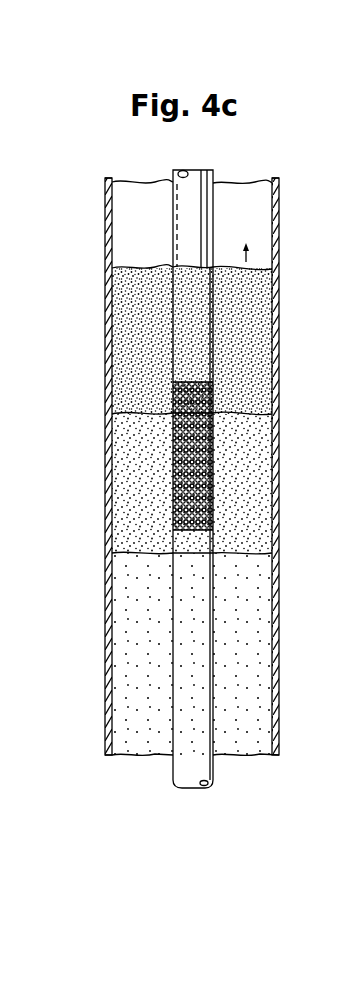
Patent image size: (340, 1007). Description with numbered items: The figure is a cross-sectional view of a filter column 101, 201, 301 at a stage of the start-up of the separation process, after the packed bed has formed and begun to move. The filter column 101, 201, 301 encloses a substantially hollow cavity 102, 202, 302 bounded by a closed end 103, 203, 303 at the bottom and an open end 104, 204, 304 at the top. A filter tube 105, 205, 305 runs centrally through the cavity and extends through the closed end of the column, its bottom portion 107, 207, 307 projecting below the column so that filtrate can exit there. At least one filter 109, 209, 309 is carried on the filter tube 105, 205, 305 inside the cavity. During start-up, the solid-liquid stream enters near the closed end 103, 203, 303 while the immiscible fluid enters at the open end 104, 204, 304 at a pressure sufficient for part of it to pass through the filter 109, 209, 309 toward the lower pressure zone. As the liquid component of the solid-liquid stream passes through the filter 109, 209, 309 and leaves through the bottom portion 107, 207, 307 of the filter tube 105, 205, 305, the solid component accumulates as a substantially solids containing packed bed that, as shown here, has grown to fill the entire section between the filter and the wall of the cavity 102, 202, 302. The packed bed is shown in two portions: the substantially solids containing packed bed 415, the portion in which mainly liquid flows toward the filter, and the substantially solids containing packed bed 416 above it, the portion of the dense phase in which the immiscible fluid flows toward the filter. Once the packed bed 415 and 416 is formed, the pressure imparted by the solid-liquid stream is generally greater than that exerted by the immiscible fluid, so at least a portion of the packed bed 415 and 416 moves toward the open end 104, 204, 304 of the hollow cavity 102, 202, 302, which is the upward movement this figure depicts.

The filter column 101 is at (170, 490).
The filter column 201 is at (170, 490).
The filter column 301 is at (0, 466).
The substantially hollow cavity 102 is at (161, 466).
The substantially hollow cavity 202 is at (161, 466).
The substantially hollow cavity 302 is at (282, 280).
The closed end 103 is at (174, 488).
The closed end 203 is at (174, 488).
The closed end 303 is at (143, 762).
The open end 104 is at (144, 201).
The open end 204 is at (144, 201).
The open end 304 is at (137, 193).
The filter tube 105 is at (159, 336).
The filter tube 205 is at (159, 336).
The filter tube 305 is at (173, 317).
The bottom portion of the filter tube 107 is at (230, 505).
The bottom portion of the filter tube 207 is at (230, 505).
The bottom portion of the filter tube 307 is at (190, 793).
The filter 109 is at (159, 468).
The filter 209 is at (159, 468).
The filter 309 is at (173, 452).
The substantially solids containing packed bed 415 is at (135, 495).
The substantially solids containing packed bed 416 is at (127, 355).